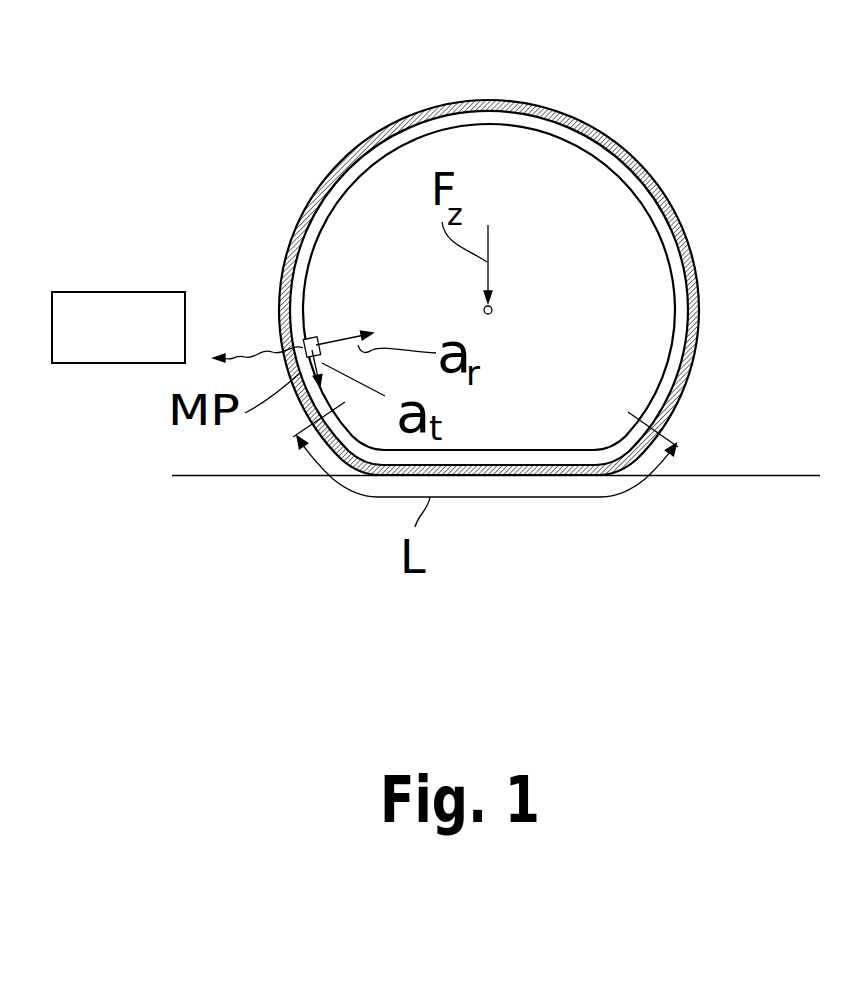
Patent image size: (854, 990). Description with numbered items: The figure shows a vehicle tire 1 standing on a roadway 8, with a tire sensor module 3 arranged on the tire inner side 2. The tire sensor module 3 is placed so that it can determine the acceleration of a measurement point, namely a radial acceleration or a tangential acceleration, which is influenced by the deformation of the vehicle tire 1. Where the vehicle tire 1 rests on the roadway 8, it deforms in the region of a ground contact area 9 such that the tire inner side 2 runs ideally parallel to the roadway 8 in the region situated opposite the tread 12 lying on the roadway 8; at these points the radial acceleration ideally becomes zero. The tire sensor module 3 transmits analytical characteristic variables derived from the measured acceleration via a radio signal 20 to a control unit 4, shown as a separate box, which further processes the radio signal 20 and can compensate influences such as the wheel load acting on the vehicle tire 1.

The vehicle tire 1 is at (305, 203).
The tire inner side 2 is at (463, 130).
The tread 12 is at (495, 102).
The tire sensor module 3 is at (310, 340).
The control unit 4 is at (126, 292).
The radio signal 20 is at (250, 355).
The ground contact area 9 is at (555, 472).
The roadway 8 is at (702, 476).